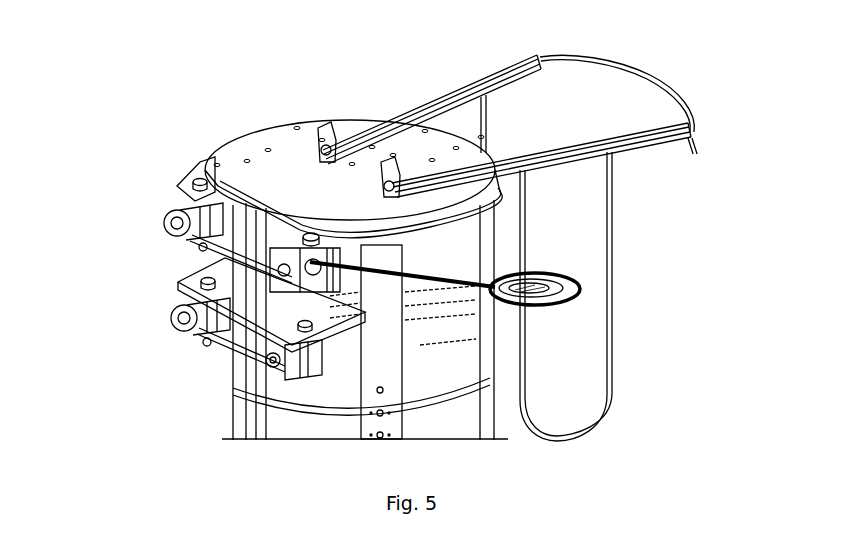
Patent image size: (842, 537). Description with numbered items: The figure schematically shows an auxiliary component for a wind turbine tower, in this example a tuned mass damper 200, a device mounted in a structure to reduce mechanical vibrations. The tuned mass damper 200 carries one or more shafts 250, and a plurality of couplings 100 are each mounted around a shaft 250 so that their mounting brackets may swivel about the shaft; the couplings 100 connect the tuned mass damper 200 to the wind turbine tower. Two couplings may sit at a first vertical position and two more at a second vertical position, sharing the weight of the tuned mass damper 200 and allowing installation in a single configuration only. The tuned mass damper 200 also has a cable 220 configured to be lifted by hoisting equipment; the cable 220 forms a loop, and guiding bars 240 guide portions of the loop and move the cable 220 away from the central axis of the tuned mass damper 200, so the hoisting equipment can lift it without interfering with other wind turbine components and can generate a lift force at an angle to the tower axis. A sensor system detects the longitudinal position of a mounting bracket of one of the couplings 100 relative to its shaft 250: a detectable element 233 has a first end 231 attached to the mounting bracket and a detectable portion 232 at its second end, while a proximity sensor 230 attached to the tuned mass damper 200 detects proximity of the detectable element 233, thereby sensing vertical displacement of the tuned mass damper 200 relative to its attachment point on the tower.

The tuned mass damper 200 is at (327, 63).
The cable 220 is at (632, 65).
The guiding bar 240 is at (695, 152).
The shaft 250 is at (190, 178).
The coupling 100 is at (163, 215).
The first end 231 is at (315, 285).
The detectable element 233 is at (458, 272).
The detectable portion 232 is at (557, 273).
The proximity sensor 230 is at (578, 284).